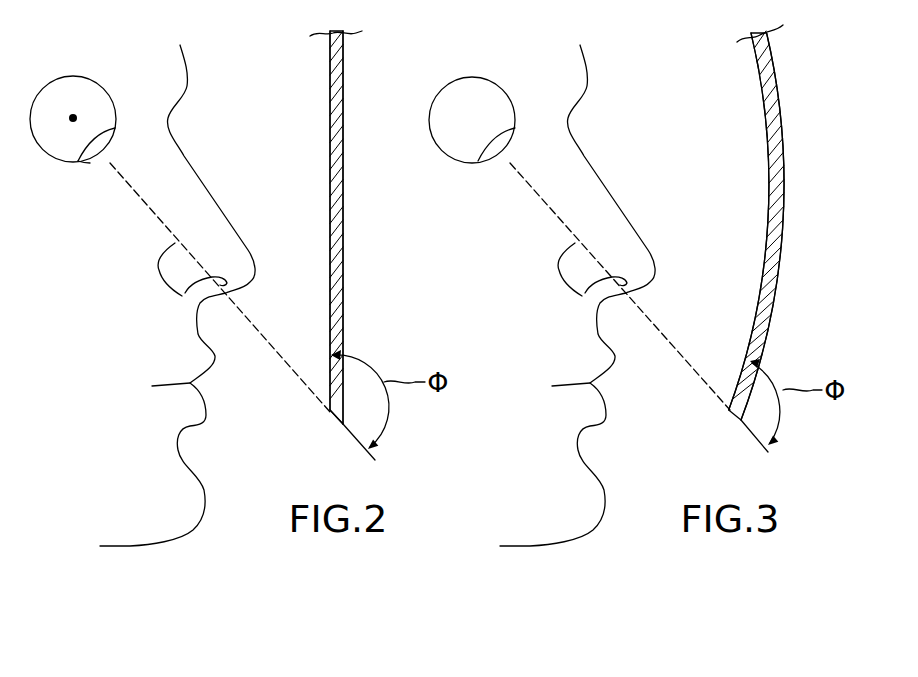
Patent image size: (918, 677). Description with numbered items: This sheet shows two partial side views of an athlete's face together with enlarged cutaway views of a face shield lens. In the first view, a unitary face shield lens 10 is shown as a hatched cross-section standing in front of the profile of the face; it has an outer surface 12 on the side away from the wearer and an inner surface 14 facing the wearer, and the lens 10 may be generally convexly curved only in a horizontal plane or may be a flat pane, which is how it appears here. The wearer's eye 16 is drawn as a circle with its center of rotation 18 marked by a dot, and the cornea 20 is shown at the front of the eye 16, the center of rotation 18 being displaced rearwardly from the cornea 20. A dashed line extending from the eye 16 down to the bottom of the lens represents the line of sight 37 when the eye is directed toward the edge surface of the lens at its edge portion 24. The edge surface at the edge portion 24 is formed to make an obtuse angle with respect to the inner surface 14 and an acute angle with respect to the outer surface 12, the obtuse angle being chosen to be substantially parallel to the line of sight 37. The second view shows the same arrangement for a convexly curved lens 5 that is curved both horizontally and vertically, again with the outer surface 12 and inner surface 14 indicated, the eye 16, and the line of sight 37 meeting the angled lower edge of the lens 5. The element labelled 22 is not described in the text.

In FIG. 3, the convexly curved lens 5 is at (770, 55).
In FIG. 2, the unitary face shield lens 10 is at (344, 53).
In FIG. 2, the outer surface 12 is at (343, 225).
In FIG. 3, the outer surface 12 is at (782, 265).
In FIG. 2, the inner surface 14 is at (328, 212).
In FIG. 3, the inner surface 14 is at (768, 250).
In FIG. 2, the eye 16 is at (85, 77).
In FIG. 3, the eye 16 is at (473, 78).
In FIG. 2, the center of rotation 18 is at (73, 118).
In FIG. 2, the cornea 20 is at (90, 163).
In FIG. 2, the cornea 22 is at (103, 128).
In FIG. 2, the edge portion 24 is at (335, 425).
In FIG. 2, the line of sight 37 is at (267, 332).
In FIG. 3, the line of sight 37 is at (676, 347).